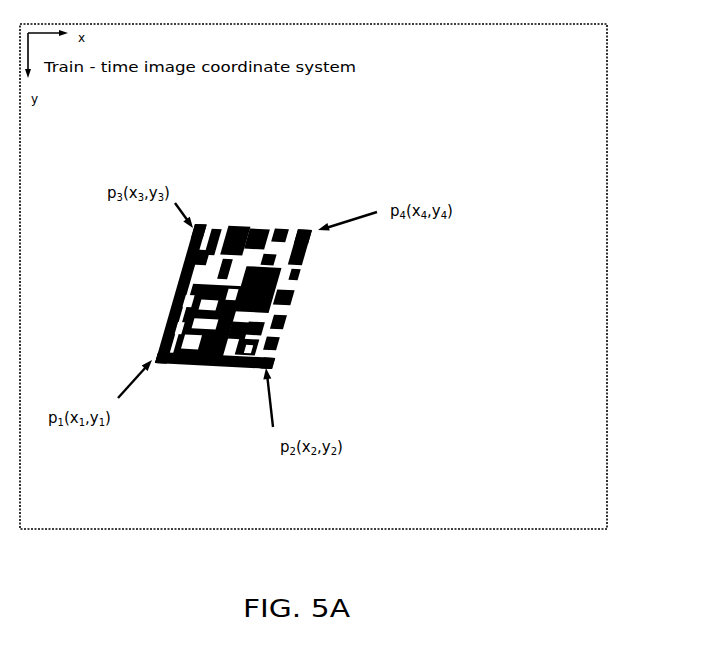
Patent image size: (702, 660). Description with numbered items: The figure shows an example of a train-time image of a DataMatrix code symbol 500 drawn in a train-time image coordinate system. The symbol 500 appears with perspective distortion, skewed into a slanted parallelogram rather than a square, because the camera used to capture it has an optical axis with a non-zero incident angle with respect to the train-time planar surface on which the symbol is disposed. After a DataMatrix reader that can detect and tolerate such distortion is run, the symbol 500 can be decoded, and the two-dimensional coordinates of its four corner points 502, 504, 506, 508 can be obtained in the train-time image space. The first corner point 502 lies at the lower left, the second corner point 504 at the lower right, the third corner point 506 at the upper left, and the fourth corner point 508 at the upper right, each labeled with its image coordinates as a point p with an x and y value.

The DataMatrix code symbol 500 is at (328, 313).
The first corner point 502 is at (156, 364).
The second corner point 504 is at (270, 368).
The third corner point 506 is at (197, 223).
The fourth corner point 508 is at (318, 232).